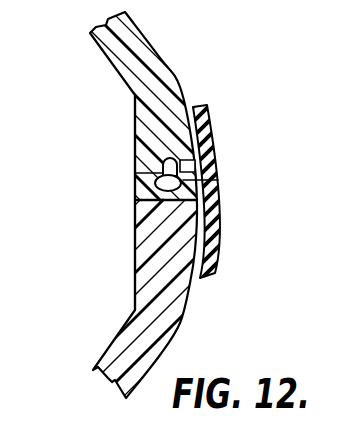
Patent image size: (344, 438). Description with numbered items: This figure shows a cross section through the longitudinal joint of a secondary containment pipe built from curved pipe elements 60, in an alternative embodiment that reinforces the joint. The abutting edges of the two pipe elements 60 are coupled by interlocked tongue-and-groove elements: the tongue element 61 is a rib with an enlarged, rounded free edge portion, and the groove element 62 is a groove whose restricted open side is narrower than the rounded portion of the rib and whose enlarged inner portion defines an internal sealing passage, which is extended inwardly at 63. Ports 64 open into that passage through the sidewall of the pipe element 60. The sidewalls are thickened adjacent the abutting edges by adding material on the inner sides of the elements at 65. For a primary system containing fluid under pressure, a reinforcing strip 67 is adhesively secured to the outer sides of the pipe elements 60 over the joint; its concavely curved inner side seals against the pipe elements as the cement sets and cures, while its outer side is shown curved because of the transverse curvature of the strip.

The pipe element 60 is at (182, 81).
The tongue element 61 is at (182, 188).
The groove element 62 is at (135, 173).
The inward extension of sealing passage 63 is at (135, 157).
The port 64 is at (187, 156).
The thickened inner side material 65 is at (135, 122).
The reinforcing strip 67 is at (216, 249).